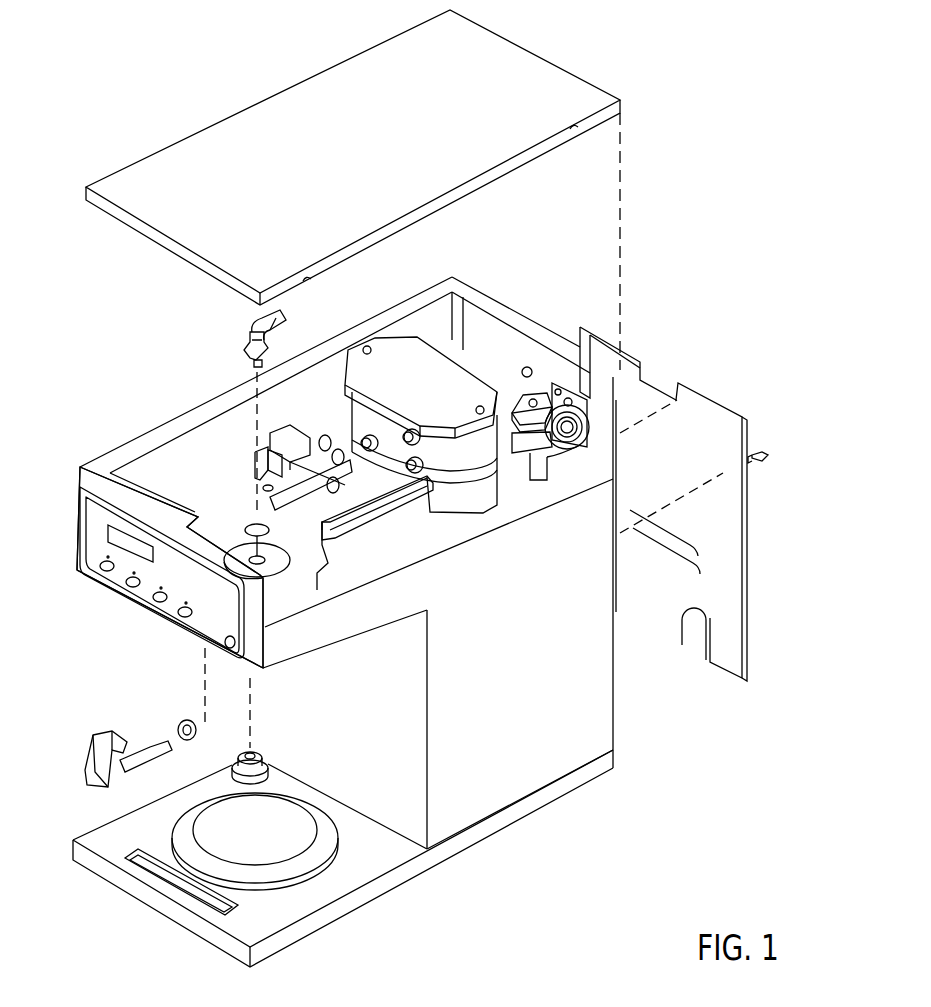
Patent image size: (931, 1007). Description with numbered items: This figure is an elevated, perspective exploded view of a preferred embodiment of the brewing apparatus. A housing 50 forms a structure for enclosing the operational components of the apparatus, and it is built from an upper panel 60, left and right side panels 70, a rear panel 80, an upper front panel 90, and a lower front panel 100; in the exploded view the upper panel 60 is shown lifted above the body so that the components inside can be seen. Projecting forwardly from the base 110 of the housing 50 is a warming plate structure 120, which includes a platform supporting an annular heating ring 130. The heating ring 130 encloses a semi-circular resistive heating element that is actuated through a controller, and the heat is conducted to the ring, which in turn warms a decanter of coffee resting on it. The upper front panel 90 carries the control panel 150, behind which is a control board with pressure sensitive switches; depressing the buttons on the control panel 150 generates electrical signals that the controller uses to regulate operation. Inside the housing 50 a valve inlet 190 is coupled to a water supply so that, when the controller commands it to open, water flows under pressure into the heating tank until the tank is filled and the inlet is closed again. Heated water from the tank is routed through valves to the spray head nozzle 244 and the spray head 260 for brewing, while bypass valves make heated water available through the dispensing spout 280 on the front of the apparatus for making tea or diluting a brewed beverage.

The housing 50 is at (640, 737).
The upper panel 60 is at (523, 63).
The side panels 70 is at (177, 450).
The rear panel 80 is at (525, 323).
The upper front panel 90 is at (78, 525).
The lower front panel 100 is at (394, 797).
The base 110 is at (447, 855).
The warming plate structure 120 is at (307, 902).
The annular heating ring 130 is at (328, 842).
The control panel 150 is at (97, 552).
The valve inlet 190 is at (557, 447).
The spray head nozzle 244 is at (253, 322).
The spray head 260 is at (455, 500).
The dispensing spout 280 is at (87, 757).